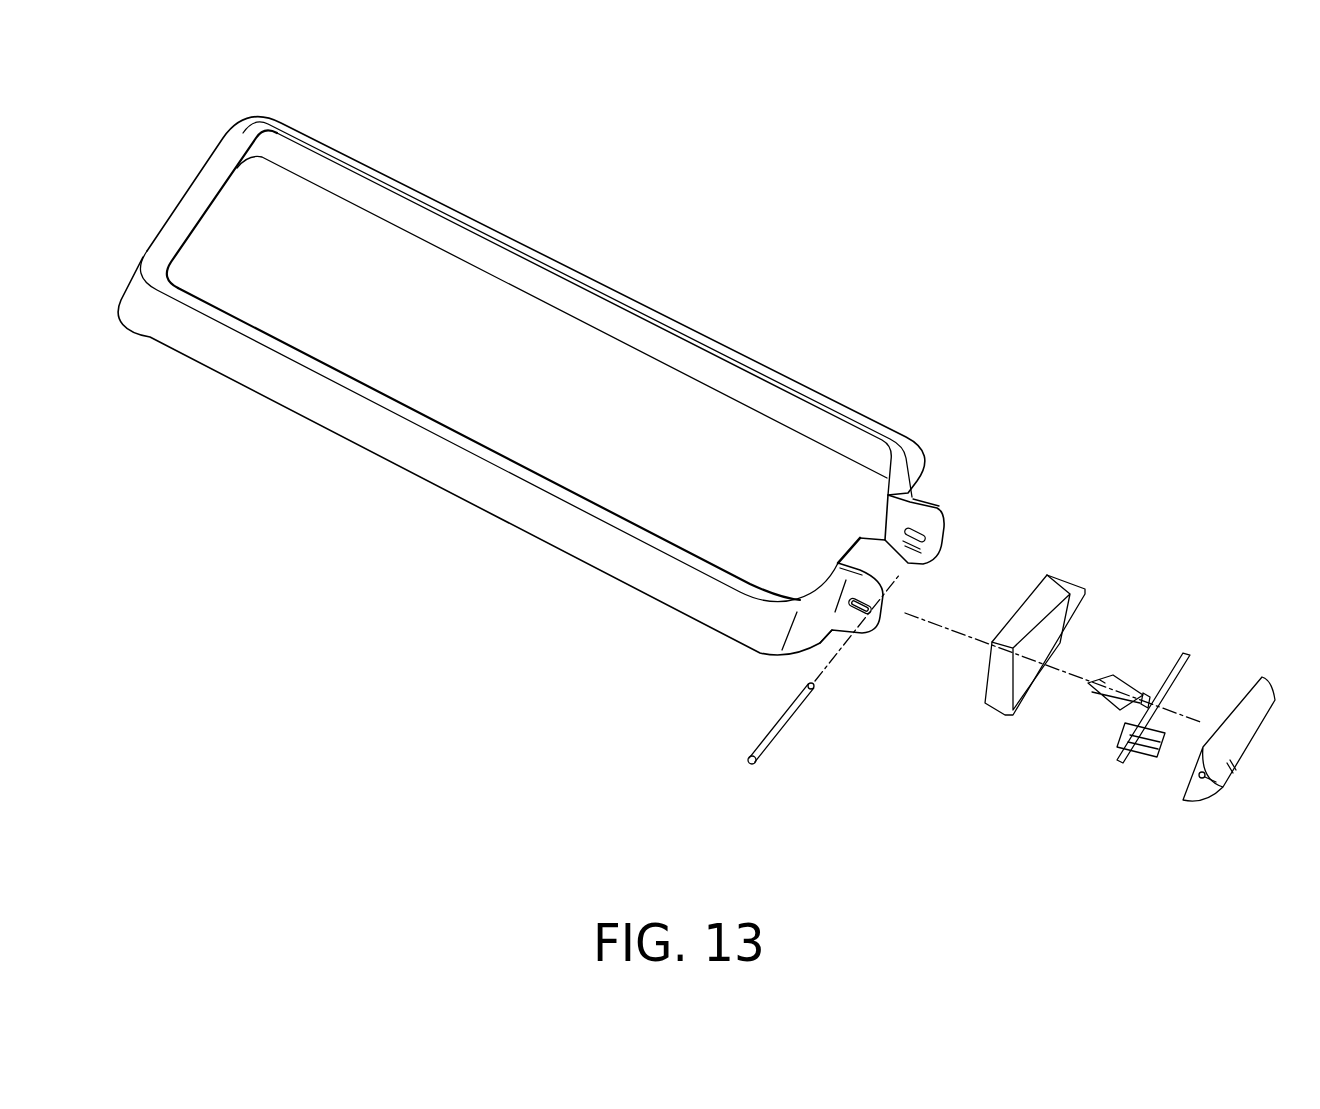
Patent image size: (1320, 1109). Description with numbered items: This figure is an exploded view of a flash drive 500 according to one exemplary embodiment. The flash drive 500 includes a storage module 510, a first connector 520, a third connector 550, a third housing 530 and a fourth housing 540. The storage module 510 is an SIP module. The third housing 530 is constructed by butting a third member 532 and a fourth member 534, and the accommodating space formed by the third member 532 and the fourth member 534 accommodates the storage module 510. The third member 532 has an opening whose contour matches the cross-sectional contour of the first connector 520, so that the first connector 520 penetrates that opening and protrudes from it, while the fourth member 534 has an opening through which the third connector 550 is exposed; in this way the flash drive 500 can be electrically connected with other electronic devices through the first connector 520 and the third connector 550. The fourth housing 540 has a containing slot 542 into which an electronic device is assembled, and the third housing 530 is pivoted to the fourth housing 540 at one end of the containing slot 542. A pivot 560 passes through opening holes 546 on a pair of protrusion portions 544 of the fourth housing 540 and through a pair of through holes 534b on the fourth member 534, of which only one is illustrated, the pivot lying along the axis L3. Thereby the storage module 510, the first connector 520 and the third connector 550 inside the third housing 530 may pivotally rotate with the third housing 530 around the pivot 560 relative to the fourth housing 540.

The flash drive 500 is at (404, 735).
The fourth housing 540 is at (655, 313).
The containing slot 542 is at (499, 305).
The protrusion portions 544 is at (945, 530).
The opening holes 546 is at (913, 515).
The axis L3 is at (917, 563).
The pivot 560 is at (782, 723).
The third housing 530 is at (1251, 472).
The third member 532 is at (1075, 585).
The fourth member 534 is at (1257, 688).
The through holes 534b is at (1205, 779).
The storage module 510 is at (1181, 649).
The first connector 520 is at (1105, 707).
The third connector 550 is at (1147, 757).